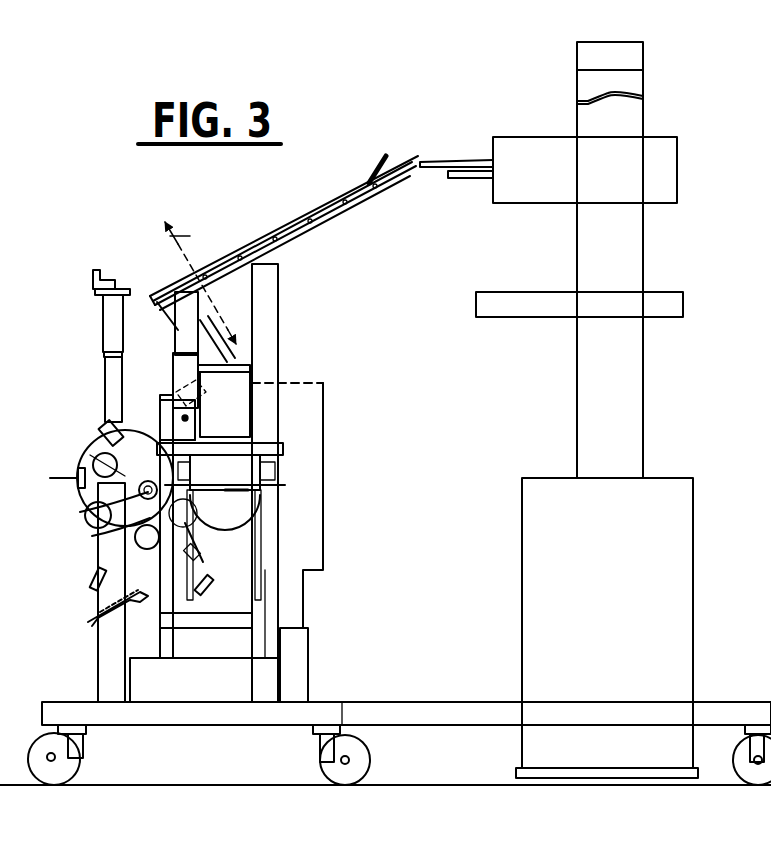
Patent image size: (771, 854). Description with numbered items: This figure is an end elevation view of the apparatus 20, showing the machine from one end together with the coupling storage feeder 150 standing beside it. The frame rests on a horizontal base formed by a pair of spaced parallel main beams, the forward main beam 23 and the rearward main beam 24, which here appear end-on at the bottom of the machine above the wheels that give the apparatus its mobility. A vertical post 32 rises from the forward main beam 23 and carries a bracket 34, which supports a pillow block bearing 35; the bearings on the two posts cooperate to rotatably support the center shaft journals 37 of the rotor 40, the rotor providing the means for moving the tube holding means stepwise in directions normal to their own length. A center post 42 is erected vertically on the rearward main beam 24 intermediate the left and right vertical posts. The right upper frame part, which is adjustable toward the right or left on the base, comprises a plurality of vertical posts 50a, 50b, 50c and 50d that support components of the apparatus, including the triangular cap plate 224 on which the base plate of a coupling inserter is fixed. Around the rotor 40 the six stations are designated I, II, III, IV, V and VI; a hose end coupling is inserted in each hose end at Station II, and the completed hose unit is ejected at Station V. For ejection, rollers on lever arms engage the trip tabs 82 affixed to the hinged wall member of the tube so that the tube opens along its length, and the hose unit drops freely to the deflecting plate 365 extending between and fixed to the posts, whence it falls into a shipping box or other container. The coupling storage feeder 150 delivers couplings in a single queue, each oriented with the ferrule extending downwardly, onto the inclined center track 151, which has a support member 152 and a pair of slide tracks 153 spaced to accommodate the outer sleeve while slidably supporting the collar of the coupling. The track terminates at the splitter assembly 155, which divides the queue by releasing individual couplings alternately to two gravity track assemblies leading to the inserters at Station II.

The apparatus 20 is at (322, 336).
The forward main beam 23 is at (148, 683).
The rearward main beam 24 is at (295, 683).
The vertical post 32 is at (110, 668).
The bracket 34 is at (100, 536).
The pillow block bearing 35 is at (80, 513).
The center shaft journal 37 is at (95, 462).
The rotor 40 is at (85, 440).
The center post 42 is at (275, 583).
The vertical post 50a is at (170, 613).
The vertical post 50b is at (258, 638).
The vertical post 50c is at (170, 613).
The vertical post 50d is at (258, 638).
The trip tab 82 is at (107, 415).
The coupling storage feeder 150 is at (652, 387).
The center track 151 is at (278, 218).
The support member 152 is at (352, 183).
The slide track 153 is at (340, 200).
The splitter assembly 155 is at (233, 325).
The triangular cap plate 224 is at (232, 452).
The deflecting plate 365 is at (90, 618).
The station I is at (100, 425).
The station II is at (165, 420).
The station III is at (232, 490).
The station IV is at (200, 548).
The station V is at (96, 566).
The station VI is at (72, 483).